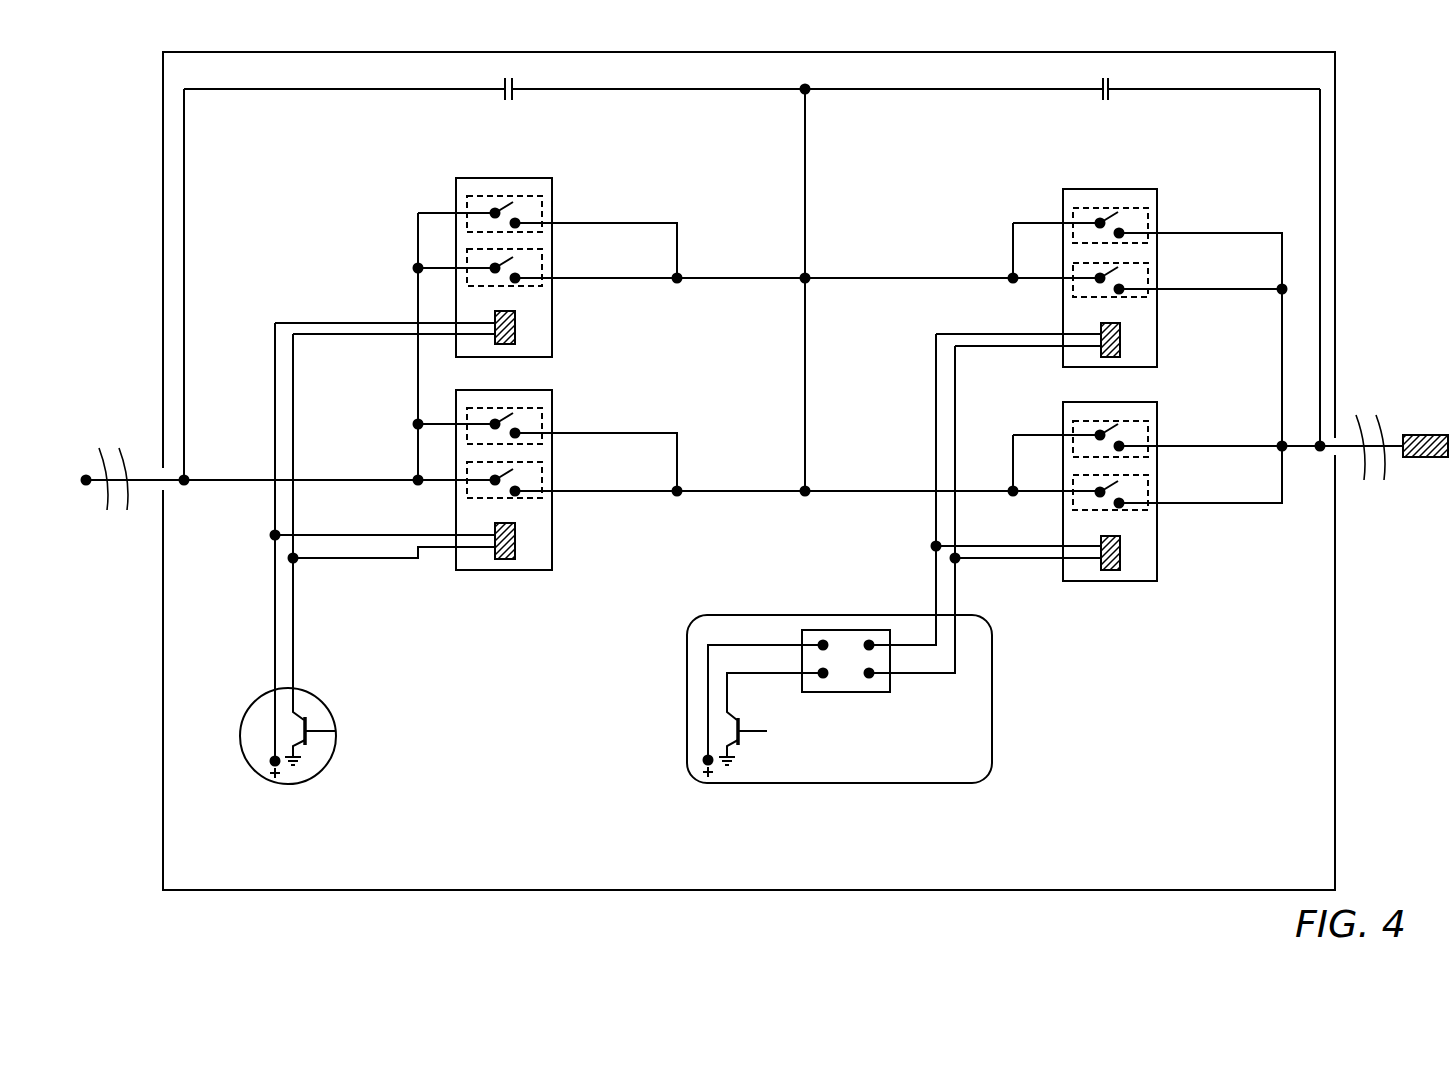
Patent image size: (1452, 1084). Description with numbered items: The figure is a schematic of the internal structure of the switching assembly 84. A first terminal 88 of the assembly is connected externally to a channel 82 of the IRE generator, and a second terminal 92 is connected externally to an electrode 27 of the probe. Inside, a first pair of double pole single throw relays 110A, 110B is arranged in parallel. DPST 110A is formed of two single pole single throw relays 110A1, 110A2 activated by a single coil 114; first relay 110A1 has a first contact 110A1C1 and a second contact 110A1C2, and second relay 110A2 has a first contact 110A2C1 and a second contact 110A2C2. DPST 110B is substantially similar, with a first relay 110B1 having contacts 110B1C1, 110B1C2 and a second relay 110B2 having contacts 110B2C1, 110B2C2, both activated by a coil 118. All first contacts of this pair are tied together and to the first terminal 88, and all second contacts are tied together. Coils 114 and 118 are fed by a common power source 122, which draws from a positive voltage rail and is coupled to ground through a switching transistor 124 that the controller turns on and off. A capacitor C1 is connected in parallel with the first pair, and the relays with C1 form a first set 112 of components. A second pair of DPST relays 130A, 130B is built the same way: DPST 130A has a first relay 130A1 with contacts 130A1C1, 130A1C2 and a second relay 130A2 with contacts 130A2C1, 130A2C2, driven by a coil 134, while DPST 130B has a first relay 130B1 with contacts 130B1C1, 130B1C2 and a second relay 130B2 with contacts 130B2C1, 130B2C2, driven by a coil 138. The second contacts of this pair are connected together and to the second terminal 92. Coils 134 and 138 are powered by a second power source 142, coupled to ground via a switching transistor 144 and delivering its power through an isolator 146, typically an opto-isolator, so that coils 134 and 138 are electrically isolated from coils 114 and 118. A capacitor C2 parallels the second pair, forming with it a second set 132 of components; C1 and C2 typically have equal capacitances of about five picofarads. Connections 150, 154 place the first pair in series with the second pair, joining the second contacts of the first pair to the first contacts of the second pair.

The electrode 27 is at (1423, 458).
The channel 82 is at (86, 483).
The switching assembly 84 is at (486, 891).
The first terminal 88 is at (184, 483).
The second terminal 92 is at (1320, 458).
The capacitor C1 is at (508, 104).
The capacitor C2 is at (1105, 104).
The double pole single throw relay 110A is at (552, 413).
The first relay 110A1 is at (543, 427).
The second relay 110A2 is at (467, 492).
The first contact 110A1C1 is at (495, 424).
The second contact 110A1C2 is at (515, 433).
The first contact 110A2C1 is at (495, 480).
The second contact 110A2C2 is at (515, 491).
The double pole single throw relay 110B is at (473, 178).
The first relay 110B1 is at (543, 204).
The second relay 110B2 is at (467, 275).
The first contact 110B1C1 is at (495, 213).
The second contact 110B1C2 is at (515, 223).
The first contact 110B2C1 is at (495, 268).
The second contact 110B2C2 is at (515, 278).
The first set of components 112 is at (522, 657).
The coil 114 is at (505, 562).
The coil 118 is at (515, 337).
The power source 122 is at (337, 732).
The switching transistor 124 is at (318, 698).
The double pole single throw relay 130A is at (1078, 583).
The first relay 130A1 is at (1148, 435).
The second relay 130A2 is at (1073, 495).
The first contact 130A1C1 is at (1100, 435).
The second contact 130A1C2 is at (1119, 446).
The first contact 130A2C1 is at (1100, 492).
The second contact 130A2C2 is at (1119, 503).
The double pole single throw relay 130B is at (1148, 189).
The first relay 130B1 is at (1148, 222).
The second relay 130B2 is at (1073, 283).
The first contact 130B1C1 is at (1100, 223).
The second contact 130B1C2 is at (1119, 233).
The first contact 130B2C1 is at (1100, 278).
The second contact 130B2C2 is at (1119, 289).
The second set of components 132 is at (1122, 657).
The coil 134 is at (1110, 572).
The coil 138 is at (1120, 345).
The power source 142 is at (992, 737).
The switching transistor 144 is at (743, 740).
The isolator 146 is at (825, 630).
The connection 150 is at (756, 281).
The connection 154 is at (756, 494).